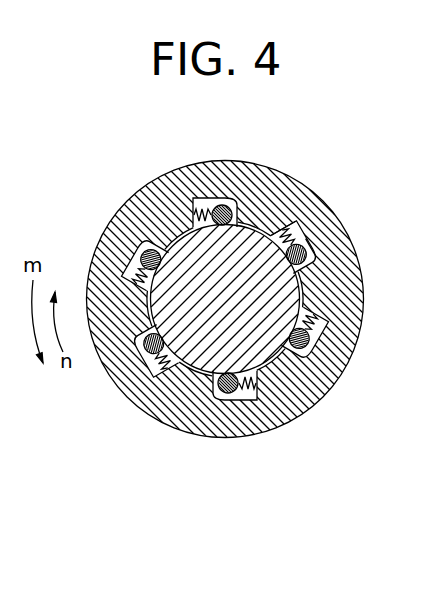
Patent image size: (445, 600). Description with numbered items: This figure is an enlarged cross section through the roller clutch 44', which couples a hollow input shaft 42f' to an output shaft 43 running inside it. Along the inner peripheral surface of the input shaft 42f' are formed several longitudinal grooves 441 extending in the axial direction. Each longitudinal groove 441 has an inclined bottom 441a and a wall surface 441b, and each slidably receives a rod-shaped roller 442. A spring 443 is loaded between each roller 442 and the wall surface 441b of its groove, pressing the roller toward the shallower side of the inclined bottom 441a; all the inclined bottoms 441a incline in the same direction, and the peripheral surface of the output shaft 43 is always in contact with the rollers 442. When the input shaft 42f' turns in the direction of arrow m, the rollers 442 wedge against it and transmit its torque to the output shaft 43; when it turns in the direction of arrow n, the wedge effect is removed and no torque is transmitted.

The input shaft 42f' is at (249, 299).
The output shaft 43 is at (328, 415).
The roller clutch 44' is at (248, 299).
The longitudinal groove 441 is at (201, 198).
The inclined bottom 441a is at (303, 240).
The wall surface 441b is at (295, 224).
The roller 442 is at (232, 447).
The spring 443 is at (113, 410).